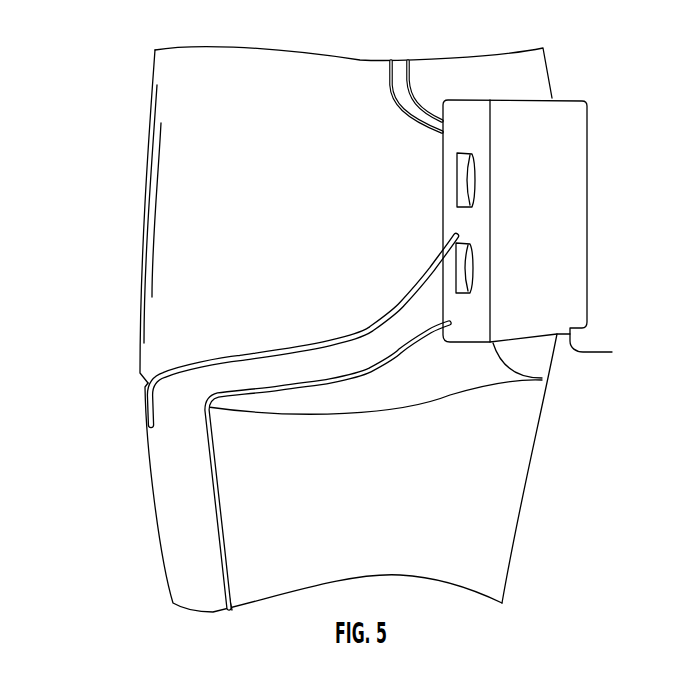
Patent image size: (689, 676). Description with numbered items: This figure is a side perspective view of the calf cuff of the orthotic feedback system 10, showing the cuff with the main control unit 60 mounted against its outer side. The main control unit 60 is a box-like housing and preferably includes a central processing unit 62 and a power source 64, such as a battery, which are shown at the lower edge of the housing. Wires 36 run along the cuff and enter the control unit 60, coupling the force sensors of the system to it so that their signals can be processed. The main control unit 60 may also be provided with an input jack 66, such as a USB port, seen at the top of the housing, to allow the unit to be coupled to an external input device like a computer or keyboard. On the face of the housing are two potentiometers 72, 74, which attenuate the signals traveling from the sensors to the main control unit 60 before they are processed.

The orthotic feedback system 10 is at (90, 222).
The wires 36 is at (293, 347).
The main control unit 60 is at (587, 146).
The central processing unit 62 is at (602, 347).
The power source 64 is at (542, 382).
The input jack 66 is at (467, 100).
The potentiometer 72 is at (453, 183).
The potentiometer 74 is at (452, 272).